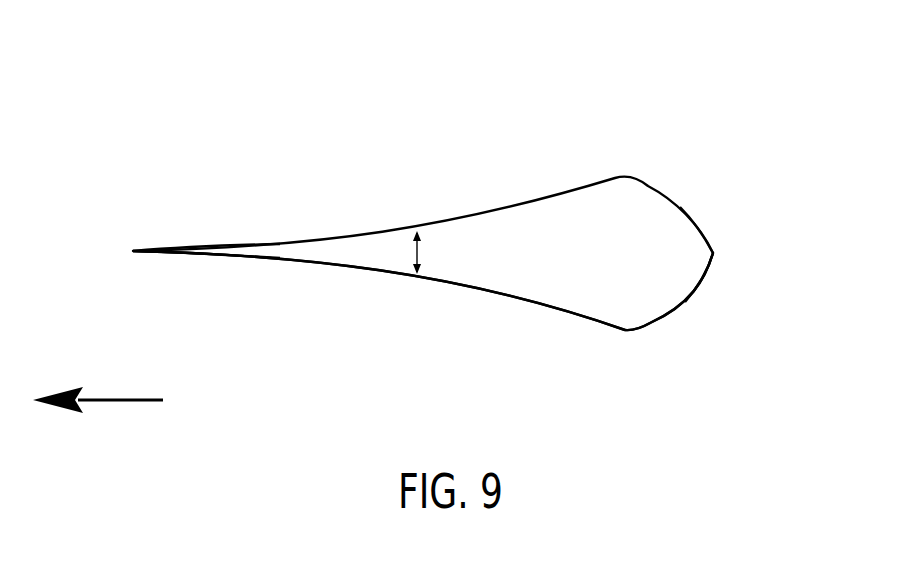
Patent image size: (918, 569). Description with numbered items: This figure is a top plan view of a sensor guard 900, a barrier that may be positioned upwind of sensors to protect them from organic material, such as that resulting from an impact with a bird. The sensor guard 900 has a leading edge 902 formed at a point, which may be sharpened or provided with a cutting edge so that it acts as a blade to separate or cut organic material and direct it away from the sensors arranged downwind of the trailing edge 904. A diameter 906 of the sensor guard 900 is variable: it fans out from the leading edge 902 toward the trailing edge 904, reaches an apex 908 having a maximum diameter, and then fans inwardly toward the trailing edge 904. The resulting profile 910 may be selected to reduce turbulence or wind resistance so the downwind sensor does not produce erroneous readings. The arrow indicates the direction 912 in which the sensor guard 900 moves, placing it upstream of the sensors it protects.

The sensor guard 900 is at (612, 83).
The leading edge 902 is at (133, 251).
The trailing edge 904 is at (714, 252).
The diameter 906 is at (417, 252).
The apex 908 is at (620, 330).
The profile 910 is at (513, 300).
The direction 912 is at (135, 400).